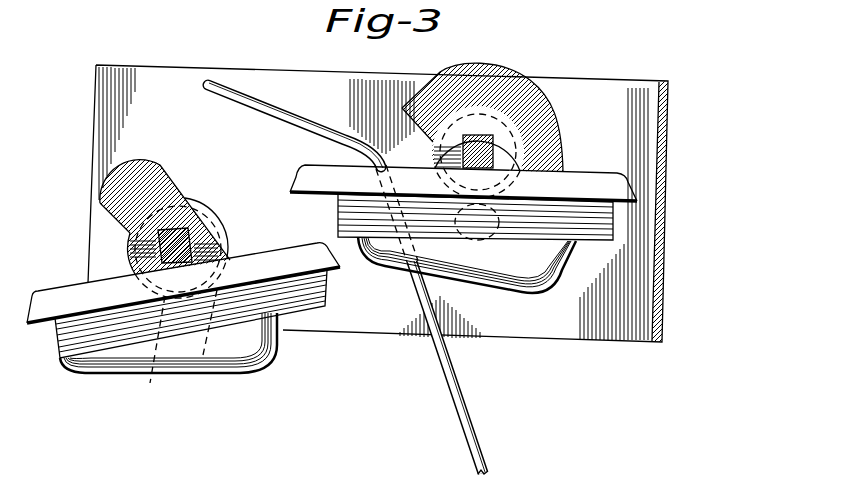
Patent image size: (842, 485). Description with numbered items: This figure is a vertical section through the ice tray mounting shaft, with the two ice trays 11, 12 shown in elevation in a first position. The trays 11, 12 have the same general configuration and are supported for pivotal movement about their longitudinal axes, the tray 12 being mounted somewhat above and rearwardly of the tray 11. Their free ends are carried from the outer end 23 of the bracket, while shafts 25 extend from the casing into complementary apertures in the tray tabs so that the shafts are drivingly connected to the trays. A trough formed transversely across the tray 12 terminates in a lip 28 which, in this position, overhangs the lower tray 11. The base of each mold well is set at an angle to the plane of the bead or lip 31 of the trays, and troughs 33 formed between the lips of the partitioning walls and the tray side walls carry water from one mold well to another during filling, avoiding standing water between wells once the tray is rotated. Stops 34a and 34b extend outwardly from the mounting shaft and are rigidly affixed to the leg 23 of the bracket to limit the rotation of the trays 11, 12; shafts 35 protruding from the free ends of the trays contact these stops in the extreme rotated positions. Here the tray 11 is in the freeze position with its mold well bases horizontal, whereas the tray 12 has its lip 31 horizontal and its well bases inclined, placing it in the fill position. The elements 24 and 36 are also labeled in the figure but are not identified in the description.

The ice tray 11 is at (191, 342).
The ice tray 12 is at (467, 283).
The outer end of the bracket 23 is at (378, 204).
The fastener of first clamp 24 is at (222, 236).
The shaft 25 is at (533, 148).
The lip 28 is at (348, 278).
The bead or lip 31 is at (332, 235).
The trough 33 is at (526, 217).
The stop 34a is at (165, 223).
The stop 34b is at (503, 126).
The shaft 35 is at (176, 352).
The cable opening of second clamp 36 is at (493, 235).